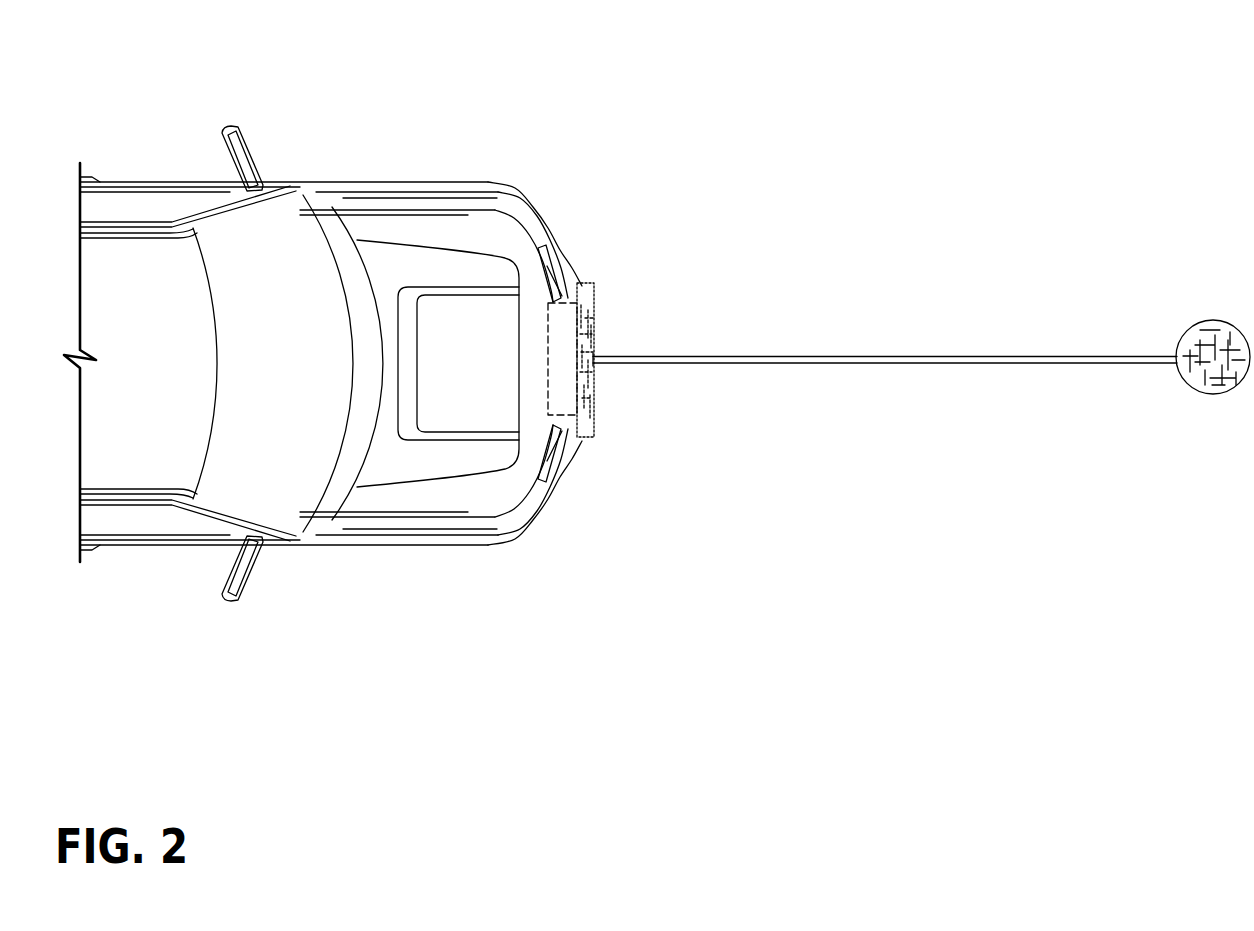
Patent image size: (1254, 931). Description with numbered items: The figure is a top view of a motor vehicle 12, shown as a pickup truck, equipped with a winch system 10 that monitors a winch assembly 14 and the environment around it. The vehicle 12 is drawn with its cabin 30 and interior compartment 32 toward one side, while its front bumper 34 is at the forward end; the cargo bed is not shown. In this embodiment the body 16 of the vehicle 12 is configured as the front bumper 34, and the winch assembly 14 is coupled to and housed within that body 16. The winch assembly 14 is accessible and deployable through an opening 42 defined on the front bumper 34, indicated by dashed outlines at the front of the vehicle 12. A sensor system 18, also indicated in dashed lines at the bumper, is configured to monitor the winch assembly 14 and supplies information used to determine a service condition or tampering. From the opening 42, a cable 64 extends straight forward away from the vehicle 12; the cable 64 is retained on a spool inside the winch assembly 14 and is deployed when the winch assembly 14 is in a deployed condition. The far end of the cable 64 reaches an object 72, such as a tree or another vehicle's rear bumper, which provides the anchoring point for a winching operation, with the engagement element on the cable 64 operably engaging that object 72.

The winch system 10 is at (607, 350).
The motor vehicle 12 is at (315, 538).
The winch assembly 14 is at (604, 375).
The body 16 is at (538, 212).
The sensor system 18 is at (583, 308).
The cabin 30 is at (143, 253).
The interior compartment 32 is at (170, 250).
The front bumper 34 is at (568, 479).
The opening 42 is at (593, 347).
The cable 64 is at (790, 357).
The object 72 is at (1198, 322).